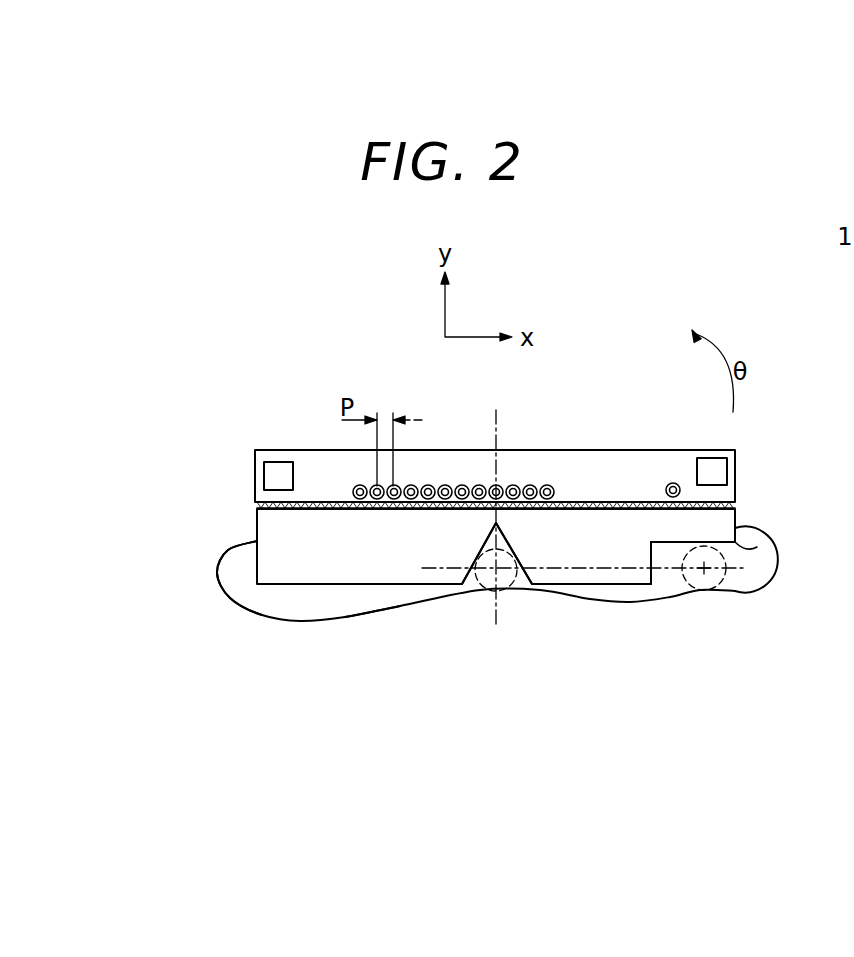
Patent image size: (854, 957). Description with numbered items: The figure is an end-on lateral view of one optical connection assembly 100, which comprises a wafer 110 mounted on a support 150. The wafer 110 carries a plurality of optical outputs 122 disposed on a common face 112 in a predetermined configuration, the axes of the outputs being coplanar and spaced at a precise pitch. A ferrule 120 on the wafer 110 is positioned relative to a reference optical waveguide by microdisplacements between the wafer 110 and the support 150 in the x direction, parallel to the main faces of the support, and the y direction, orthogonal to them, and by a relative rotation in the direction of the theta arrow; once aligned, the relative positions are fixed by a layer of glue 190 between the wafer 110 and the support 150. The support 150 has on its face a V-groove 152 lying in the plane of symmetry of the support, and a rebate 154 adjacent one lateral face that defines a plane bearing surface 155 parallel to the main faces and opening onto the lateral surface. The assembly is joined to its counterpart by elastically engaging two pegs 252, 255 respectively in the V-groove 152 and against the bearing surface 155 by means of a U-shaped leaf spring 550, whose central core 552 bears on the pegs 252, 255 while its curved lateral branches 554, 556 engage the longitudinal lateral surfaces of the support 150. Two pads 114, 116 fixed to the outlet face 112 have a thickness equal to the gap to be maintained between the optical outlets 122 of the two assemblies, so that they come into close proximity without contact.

The assembly 100 is at (481, 482).
The wafer 110 is at (585, 473).
The common face 112 is at (540, 467).
The pad 114 is at (718, 472).
The pad 116 is at (275, 470).
The ferrule 120 is at (434, 474).
The optical outputs 122 is at (548, 512).
The layer of glue 190 is at (262, 505).
The support 150 is at (513, 606).
The V-groove 152 is at (474, 598).
The rebate 154 is at (665, 562).
The bearing surface 155 is at (757, 547).
The peg 252 is at (515, 581).
The peg 255 is at (730, 583).
The leaf spring 550 is at (499, 613).
The central core 552 is at (373, 612).
The lateral branch 554 is at (772, 572).
The lateral branch 556 is at (218, 573).